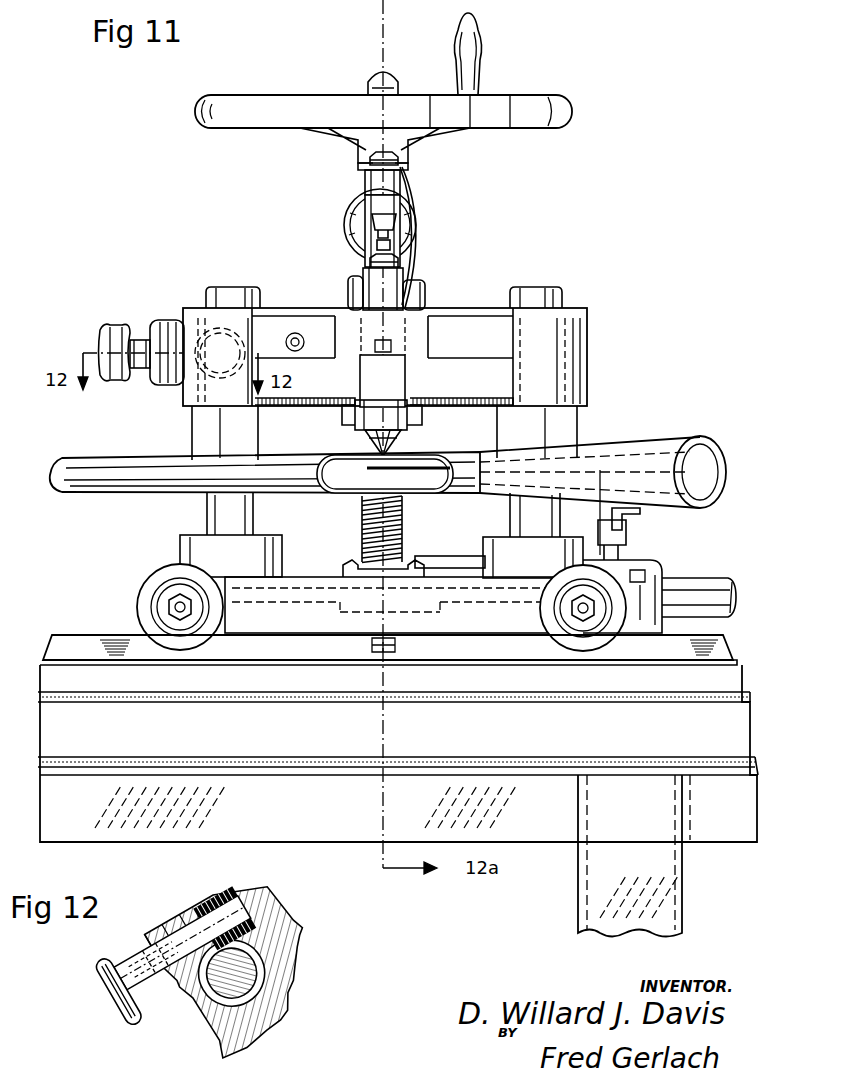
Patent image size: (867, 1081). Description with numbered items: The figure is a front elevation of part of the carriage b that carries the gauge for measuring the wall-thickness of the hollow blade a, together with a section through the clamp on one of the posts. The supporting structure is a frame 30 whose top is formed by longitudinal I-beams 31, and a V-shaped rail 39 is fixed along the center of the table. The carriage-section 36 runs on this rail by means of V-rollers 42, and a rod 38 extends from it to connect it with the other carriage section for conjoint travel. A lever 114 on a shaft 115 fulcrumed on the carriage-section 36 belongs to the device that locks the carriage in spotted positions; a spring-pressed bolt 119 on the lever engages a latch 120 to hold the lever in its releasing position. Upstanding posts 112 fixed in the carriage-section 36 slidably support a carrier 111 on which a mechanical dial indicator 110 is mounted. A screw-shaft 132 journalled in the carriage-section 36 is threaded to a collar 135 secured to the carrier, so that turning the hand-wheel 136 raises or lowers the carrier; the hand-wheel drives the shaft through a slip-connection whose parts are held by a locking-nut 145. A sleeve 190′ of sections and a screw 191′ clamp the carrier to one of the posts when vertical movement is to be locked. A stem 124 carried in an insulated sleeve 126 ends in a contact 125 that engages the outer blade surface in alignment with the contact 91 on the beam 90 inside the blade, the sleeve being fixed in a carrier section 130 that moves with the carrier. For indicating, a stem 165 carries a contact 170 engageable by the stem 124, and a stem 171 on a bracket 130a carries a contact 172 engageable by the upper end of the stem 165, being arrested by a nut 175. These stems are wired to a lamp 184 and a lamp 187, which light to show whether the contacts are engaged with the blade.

In FIG. 11, the hand-wheel 136 is at (285, 107).
In FIG. 11, the locking-nut 145 is at (378, 78).
In FIG. 11, the nut 175 is at (368, 157).
In FIG. 11, the stem 171 is at (410, 148).
In FIG. 11, the bracket 130a is at (396, 232).
In FIG. 11, the mechanical dial indicator 110 is at (420, 238).
In FIG. 11, the contact 172 is at (375, 222).
In FIG. 11, the stem 165 is at (377, 245).
In FIG. 11, the lamp 187 is at (358, 284).
In FIG. 11, the lamp 184 is at (425, 291).
In FIG. 11, the carrier section 130 is at (456, 378).
In FIG. 11, the carrier 111 is at (552, 364).
In FIG. 12, the carrier 111 is at (292, 925).
In FIG. 11, the upstanding posts 112 is at (226, 300).
In FIG. 12, the upstanding posts 112 is at (250, 985).
In FIG. 11, the screw 191′ is at (105, 326).
In FIG. 12, the screw 191′ is at (123, 1013).
In FIG. 11, the contact 170 is at (374, 340).
In FIG. 11, the carriage b is at (218, 388).
In FIG. 11, the hollow blade a is at (140, 470).
In FIG. 11, the sleeve 126 is at (372, 421).
In FIG. 11, the collar 135 is at (416, 418).
In FIG. 11, the stem 124 is at (372, 441).
In FIG. 11, the contact 125 is at (397, 448).
In FIG. 11, the contact 91 is at (390, 466).
In FIG. 11, the beam 90 is at (405, 472).
In FIG. 11, the latch 120 is at (612, 505).
In FIG. 11, the lever 114 is at (632, 516).
In FIG. 11, the spring-pressed bolt 119 is at (628, 532).
In FIG. 11, the screw-shaft 132 is at (362, 540).
In FIG. 11, the shaft 115 is at (447, 561).
In FIG. 11, the carriage-section 36 is at (215, 550).
In FIG. 11, the V-rollers 42 is at (150, 600).
In FIG. 11, the rod 38 is at (705, 595).
In FIG. 11, the V-shaped rail 39 is at (92, 643).
In FIG. 11, the longitudinal I-beams 31 is at (338, 727).
In FIG. 11, the frame 30 is at (572, 808).
In FIG. 12, the sleeve 190′ is at (208, 910).